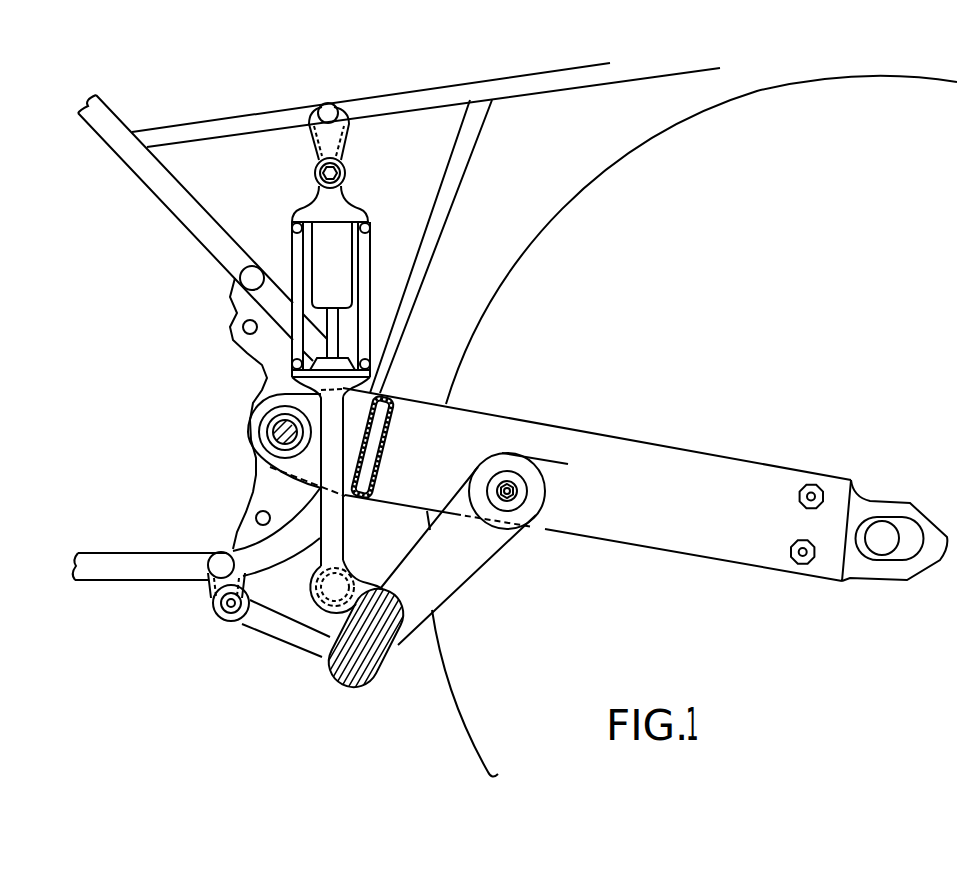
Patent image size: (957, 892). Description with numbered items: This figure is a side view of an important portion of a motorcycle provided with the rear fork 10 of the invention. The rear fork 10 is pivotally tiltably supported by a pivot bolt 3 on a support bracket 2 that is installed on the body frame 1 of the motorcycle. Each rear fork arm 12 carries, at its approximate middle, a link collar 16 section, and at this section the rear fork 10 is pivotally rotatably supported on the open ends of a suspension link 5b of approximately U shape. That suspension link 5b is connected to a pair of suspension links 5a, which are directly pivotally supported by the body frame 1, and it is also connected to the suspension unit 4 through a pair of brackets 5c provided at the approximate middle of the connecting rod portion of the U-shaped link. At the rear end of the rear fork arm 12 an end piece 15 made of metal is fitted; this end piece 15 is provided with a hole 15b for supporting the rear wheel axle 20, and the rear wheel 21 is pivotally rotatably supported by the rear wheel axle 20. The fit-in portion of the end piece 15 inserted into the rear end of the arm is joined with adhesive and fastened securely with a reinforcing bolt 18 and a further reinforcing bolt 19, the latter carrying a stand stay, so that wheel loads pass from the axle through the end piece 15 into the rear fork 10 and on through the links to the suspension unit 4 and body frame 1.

The body frame 1 is at (195, 222).
The support bracket 2 is at (264, 374).
The pivot bolt 3 is at (270, 435).
The suspension unit 4 is at (372, 253).
The suspension links 5a is at (281, 640).
The suspension link 5b is at (452, 580).
The brackets 5c is at (337, 636).
The rear fork 10 is at (757, 436).
The rear fork arm 12 is at (627, 447).
The end piece 15 is at (868, 493).
The hole 15b is at (906, 523).
The link collar 16 is at (527, 515).
The reinforcing bolt 18 is at (817, 485).
The reinforcing bolt 19 is at (803, 566).
The rear wheel axle 20 is at (882, 551).
The rear wheel 21 is at (752, 92).